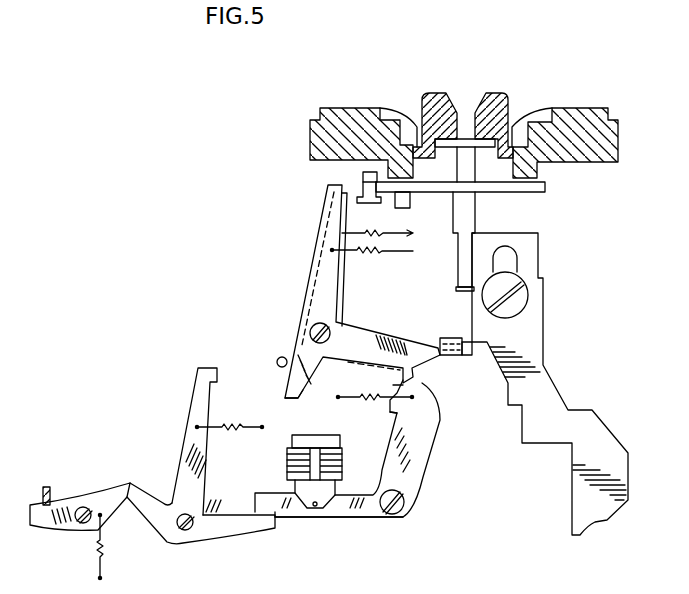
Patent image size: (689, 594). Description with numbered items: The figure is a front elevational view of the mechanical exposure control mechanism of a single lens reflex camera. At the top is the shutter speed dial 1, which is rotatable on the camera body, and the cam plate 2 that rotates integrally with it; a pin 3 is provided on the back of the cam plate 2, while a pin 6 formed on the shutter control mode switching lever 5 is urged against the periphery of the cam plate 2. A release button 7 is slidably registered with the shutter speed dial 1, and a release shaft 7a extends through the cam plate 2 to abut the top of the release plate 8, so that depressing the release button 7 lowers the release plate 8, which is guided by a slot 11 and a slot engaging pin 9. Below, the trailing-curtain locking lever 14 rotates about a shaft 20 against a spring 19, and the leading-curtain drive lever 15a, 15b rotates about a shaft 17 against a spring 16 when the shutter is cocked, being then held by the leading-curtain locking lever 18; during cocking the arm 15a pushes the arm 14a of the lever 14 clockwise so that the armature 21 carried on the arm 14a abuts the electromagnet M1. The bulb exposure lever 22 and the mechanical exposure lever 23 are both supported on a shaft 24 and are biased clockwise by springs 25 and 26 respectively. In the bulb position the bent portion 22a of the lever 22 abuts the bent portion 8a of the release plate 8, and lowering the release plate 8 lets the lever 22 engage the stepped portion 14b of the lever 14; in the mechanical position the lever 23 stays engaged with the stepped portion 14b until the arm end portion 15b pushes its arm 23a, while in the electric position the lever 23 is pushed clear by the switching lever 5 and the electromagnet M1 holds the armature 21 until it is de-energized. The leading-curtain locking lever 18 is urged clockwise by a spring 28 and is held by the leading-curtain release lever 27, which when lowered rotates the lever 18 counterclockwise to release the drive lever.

The shutter speed dial 1 is at (320, 137).
The cam plate 2 is at (540, 190).
The pin 3 is at (408, 203).
The shutter control mode switching lever 5 is at (372, 200).
The pin 6 is at (363, 175).
The release button 7 is at (503, 92).
The release shaft 7a is at (473, 205).
The release plate 8 is at (618, 473).
The bent portion 8a is at (467, 355).
The slot engaging pin 9 is at (515, 302).
The slot 11 is at (513, 260).
The trailing-curtain locking lever 14 is at (407, 488).
The arm 14a is at (339, 515).
The stepped portion 14b is at (430, 386).
The arm 15a is at (256, 526).
The arm end portion 15b is at (205, 372).
The spring 16 is at (231, 433).
The shaft 17 is at (185, 533).
The leading-curtain locking lever 18 is at (68, 523).
The spring 19 is at (368, 400).
The shaft 20 is at (403, 513).
The armature 21 is at (305, 497).
The bulb exposure lever 22 is at (310, 297).
The bent portion 22a is at (445, 338).
The mechanical exposure lever 23 is at (308, 320).
The arm 23a is at (286, 382).
The shaft 24 is at (343, 326).
The spring 25 is at (386, 228).
The spring 26 is at (377, 253).
The leading-curtain release lever 27 is at (47, 487).
The spring 28 is at (121, 540).
The electromagnet M1 is at (318, 440).